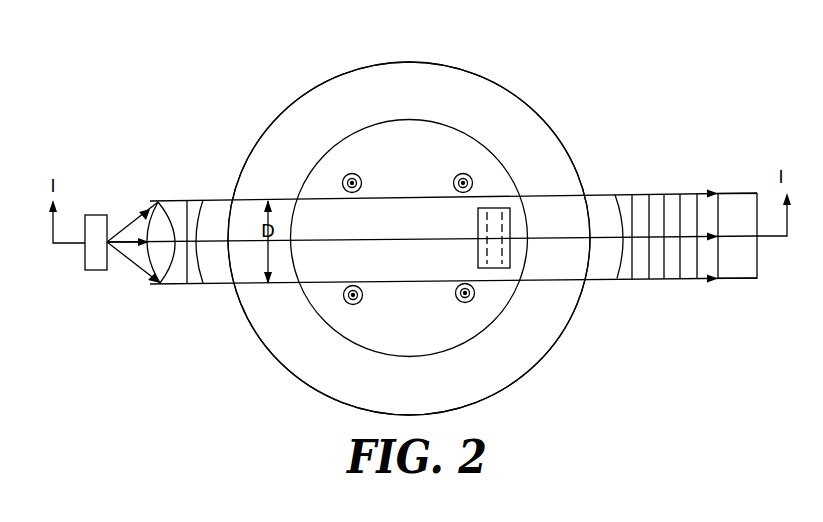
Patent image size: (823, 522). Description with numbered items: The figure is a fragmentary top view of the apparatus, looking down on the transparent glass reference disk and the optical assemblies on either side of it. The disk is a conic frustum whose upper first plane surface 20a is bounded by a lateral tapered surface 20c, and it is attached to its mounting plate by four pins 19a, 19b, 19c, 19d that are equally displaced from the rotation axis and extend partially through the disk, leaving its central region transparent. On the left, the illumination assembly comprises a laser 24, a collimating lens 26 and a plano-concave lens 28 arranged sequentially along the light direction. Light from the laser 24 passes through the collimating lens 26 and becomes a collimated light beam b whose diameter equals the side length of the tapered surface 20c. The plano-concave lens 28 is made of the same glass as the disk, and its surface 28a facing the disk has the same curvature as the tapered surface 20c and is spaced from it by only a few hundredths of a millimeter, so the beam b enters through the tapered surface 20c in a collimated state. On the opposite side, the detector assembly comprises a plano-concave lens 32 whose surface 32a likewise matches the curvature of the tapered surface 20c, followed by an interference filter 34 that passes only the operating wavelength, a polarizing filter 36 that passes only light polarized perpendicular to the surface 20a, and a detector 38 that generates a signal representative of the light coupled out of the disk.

The laser 24 is at (100, 222).
The collimating lens 26 is at (155, 220).
The plano-concave lens 28 is at (192, 205).
The surface 28a is at (200, 263).
The first plane surface 20a is at (448, 98).
The lateral tapered surface 20c is at (262, 343).
The pin 19a is at (342, 182).
The pin 19b is at (472, 178).
The pin 19c is at (352, 304).
The pin 19d is at (466, 302).
The collimated light beam b is at (408, 272).
The plano-concave lens 32 is at (625, 203).
The surface 32a is at (617, 265).
The interference filter 34 is at (655, 203).
The polarizing filter 36 is at (690, 205).
The detector 38 is at (740, 212).